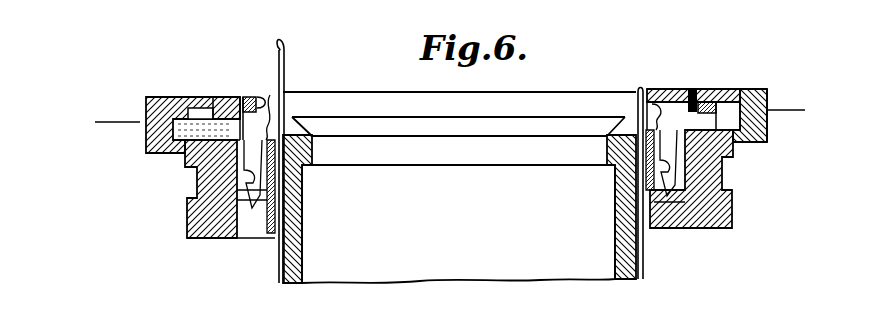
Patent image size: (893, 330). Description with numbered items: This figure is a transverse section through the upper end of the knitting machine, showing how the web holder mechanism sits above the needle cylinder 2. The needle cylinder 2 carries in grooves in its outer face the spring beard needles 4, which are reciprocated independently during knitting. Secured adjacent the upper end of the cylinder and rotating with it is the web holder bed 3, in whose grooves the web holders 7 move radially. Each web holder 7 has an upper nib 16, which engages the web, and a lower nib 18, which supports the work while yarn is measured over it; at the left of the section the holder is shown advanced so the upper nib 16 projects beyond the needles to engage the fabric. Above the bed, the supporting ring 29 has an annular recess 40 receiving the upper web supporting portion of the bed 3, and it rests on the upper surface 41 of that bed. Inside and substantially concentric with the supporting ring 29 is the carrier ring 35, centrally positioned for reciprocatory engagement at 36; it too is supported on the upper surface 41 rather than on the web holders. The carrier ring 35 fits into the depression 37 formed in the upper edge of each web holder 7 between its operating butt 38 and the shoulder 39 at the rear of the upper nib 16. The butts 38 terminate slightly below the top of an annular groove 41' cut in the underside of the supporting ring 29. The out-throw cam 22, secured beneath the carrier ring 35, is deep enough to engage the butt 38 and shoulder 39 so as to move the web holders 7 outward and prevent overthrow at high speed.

The needle cylinder 2 is at (450, 113).
The web holder bed 3 is at (733, 147).
The spring beard needles 4 is at (287, 92).
The web holders 7 is at (198, 163).
The upper nib 16 is at (290, 108).
The lower nib 18 is at (293, 128).
The out-throw cam 22 is at (691, 89).
The supporting ring 29 is at (147, 100).
The carrier ring 35 is at (229, 97).
The reciprocatory engagement 36 is at (210, 108).
The depression 37 is at (230, 122).
The operating butt 38 is at (193, 128).
The shoulder 39 is at (258, 104).
The annular recess 40 is at (648, 103).
The upper surface 41 is at (789, 110).
The annular groove 41' is at (753, 99).